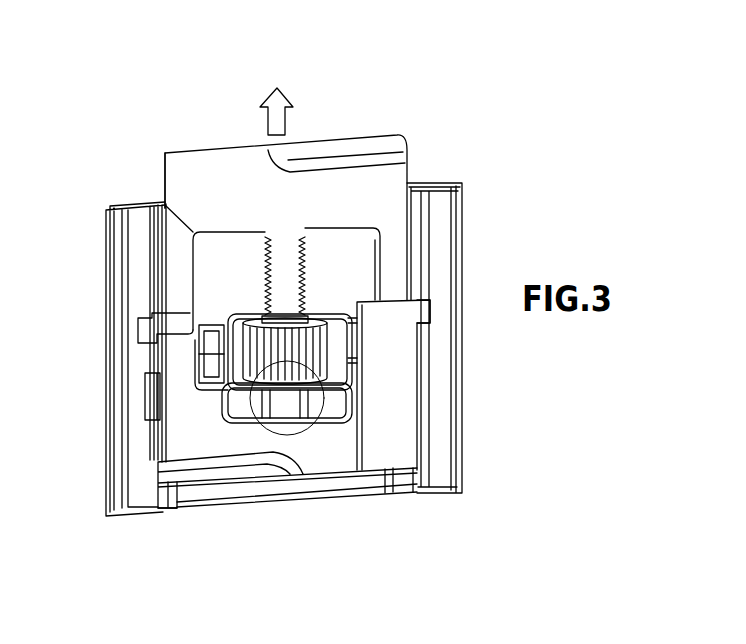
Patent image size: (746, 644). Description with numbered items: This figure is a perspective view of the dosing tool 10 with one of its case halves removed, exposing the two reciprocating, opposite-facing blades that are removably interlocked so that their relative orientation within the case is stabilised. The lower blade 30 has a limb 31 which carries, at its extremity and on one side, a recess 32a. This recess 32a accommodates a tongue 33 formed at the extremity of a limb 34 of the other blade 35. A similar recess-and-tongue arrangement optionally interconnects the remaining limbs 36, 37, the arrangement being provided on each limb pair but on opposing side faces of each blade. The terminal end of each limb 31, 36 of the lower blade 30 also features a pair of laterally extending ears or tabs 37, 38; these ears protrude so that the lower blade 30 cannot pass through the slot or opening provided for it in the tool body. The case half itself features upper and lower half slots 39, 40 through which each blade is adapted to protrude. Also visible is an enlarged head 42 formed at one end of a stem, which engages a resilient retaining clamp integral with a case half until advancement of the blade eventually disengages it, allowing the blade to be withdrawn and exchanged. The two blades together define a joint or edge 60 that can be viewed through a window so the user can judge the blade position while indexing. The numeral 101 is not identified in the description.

The dosing tool 10 is at (520, 58).
The lower blade 30 is at (387, 432).
The limb 31 is at (173, 380).
The recess 32a is at (180, 347).
The tongue 33 is at (180, 297).
The limb 34 is at (218, 270).
The other blade 35 is at (345, 188).
The limb 36 is at (393, 378).
The limb / ear 37 is at (148, 325).
The ear or tab 38 is at (427, 310).
The upper half slot 39 is at (167, 208).
The lower half slot 40 is at (167, 513).
The enlarged head 42 is at (293, 410).
The joint or edge 60 is at (388, 297).
The support post 101 is at (398, 497).